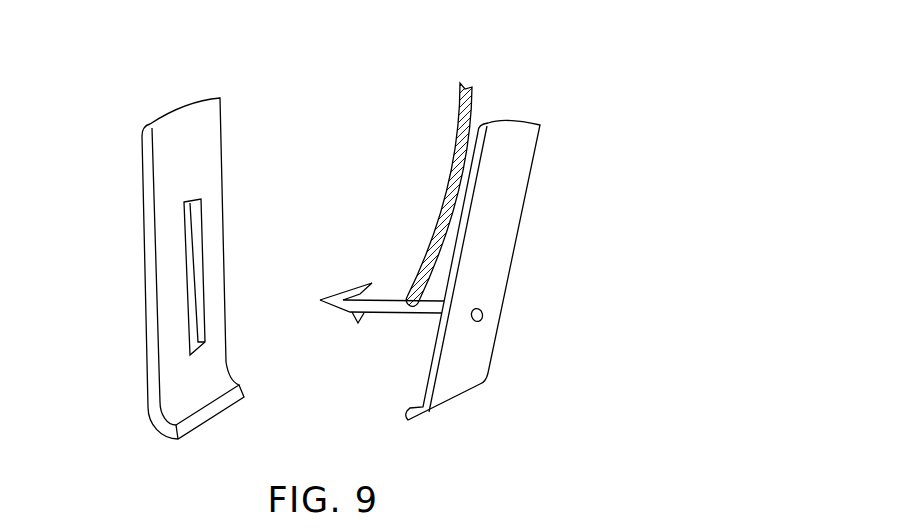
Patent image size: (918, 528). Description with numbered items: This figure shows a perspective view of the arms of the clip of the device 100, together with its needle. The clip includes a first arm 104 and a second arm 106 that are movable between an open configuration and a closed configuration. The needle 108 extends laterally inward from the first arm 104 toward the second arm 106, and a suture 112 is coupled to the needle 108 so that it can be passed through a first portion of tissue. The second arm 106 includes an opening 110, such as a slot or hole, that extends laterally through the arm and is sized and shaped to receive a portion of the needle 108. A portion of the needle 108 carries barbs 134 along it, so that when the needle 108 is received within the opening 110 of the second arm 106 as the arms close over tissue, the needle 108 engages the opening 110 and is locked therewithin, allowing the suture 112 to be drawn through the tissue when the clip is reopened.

The device 100 is at (325, 121).
The first arm 104 is at (488, 233).
The second arm 106 is at (143, 238).
The needle 108 is at (390, 300).
The opening 110 is at (195, 272).
The suture 112 is at (472, 102).
The barbs 134 is at (350, 320).